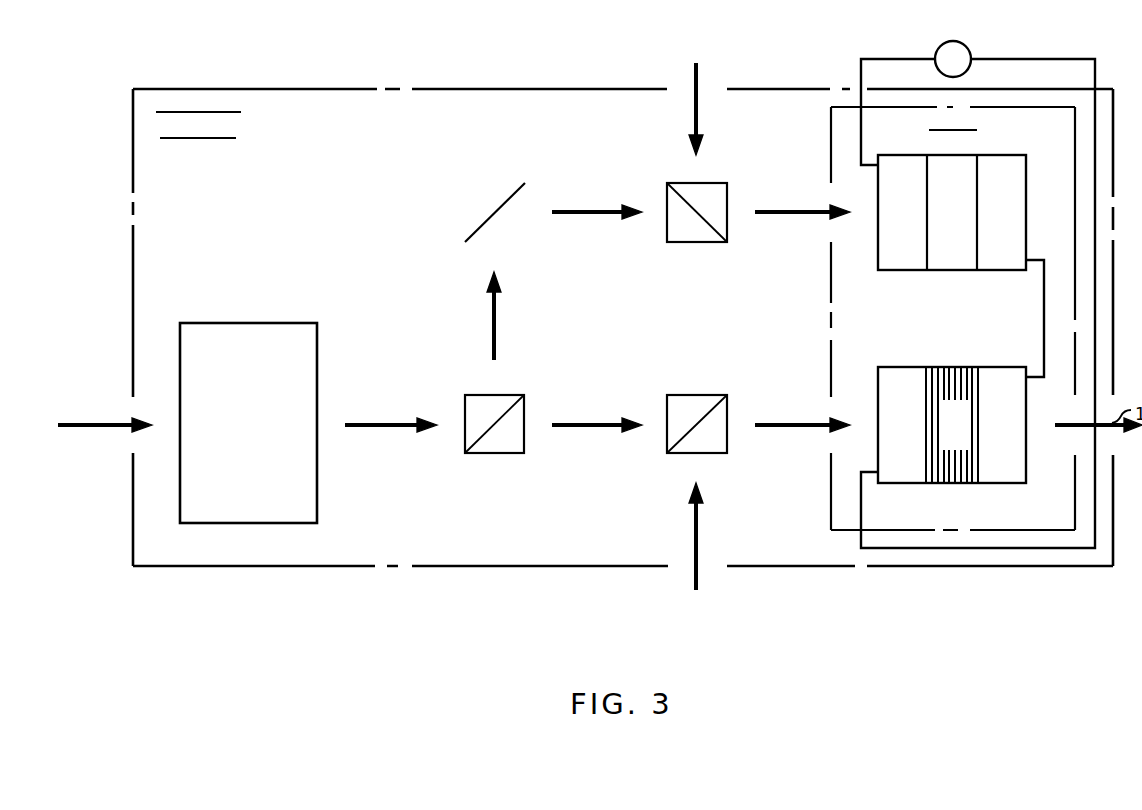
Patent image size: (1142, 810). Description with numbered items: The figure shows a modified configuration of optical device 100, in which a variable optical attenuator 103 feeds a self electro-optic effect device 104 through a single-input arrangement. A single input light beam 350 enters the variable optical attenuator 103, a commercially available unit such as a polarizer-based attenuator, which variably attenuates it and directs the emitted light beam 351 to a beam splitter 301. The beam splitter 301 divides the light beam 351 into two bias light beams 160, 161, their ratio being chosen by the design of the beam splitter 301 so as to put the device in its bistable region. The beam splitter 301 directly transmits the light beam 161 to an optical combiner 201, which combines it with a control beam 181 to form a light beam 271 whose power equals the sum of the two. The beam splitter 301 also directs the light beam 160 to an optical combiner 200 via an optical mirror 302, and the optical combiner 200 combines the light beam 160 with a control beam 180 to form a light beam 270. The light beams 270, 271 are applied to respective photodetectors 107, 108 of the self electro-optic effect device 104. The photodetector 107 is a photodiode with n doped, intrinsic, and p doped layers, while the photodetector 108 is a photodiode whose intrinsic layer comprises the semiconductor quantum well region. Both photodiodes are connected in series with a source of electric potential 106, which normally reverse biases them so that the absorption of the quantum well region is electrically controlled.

The optical device 100 is at (253, 88).
The variable optical attenuator 103 is at (252, 322).
The self electro-optic effect device 104 is at (837, 153).
The source of electric potential 106 is at (965, 46).
The photodetector 107 is at (994, 143).
The photodetector 108 is at (979, 353).
The light beam 160 is at (497, 323).
The light beam 161 is at (588, 420).
The control beam 180 is at (700, 113).
The control beam 181 is at (700, 536).
The optical combiner 200 is at (712, 183).
The optical combiner 201 is at (681, 456).
The light beam 270 is at (793, 210).
The light beam 271 is at (793, 423).
The beam splitter 301 is at (514, 394).
The optical mirror 302 is at (516, 185).
The input light beam 350 is at (95, 421).
The emitted light beam 351 is at (382, 421).